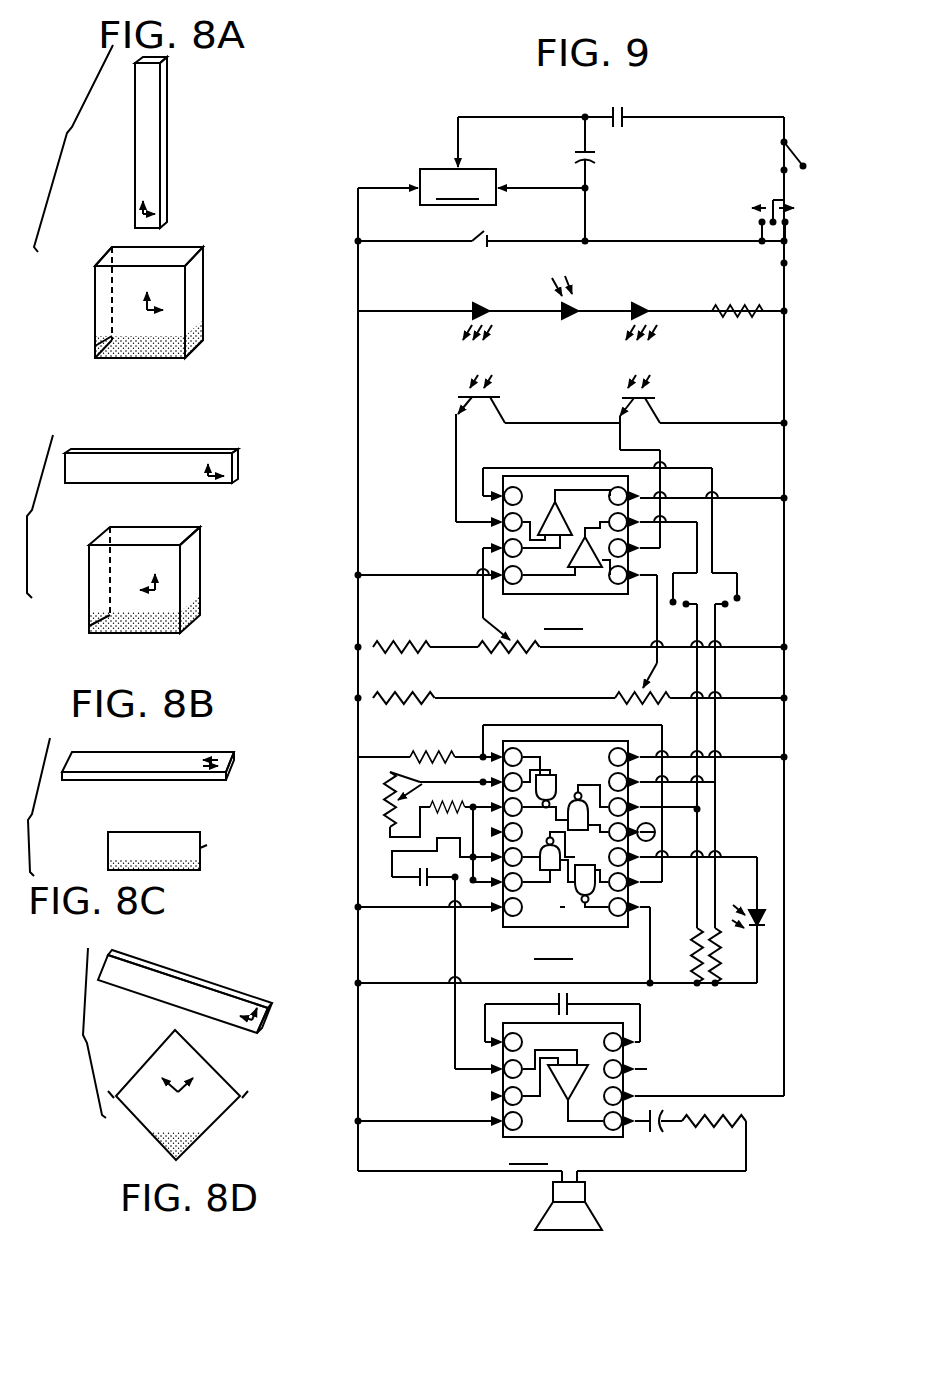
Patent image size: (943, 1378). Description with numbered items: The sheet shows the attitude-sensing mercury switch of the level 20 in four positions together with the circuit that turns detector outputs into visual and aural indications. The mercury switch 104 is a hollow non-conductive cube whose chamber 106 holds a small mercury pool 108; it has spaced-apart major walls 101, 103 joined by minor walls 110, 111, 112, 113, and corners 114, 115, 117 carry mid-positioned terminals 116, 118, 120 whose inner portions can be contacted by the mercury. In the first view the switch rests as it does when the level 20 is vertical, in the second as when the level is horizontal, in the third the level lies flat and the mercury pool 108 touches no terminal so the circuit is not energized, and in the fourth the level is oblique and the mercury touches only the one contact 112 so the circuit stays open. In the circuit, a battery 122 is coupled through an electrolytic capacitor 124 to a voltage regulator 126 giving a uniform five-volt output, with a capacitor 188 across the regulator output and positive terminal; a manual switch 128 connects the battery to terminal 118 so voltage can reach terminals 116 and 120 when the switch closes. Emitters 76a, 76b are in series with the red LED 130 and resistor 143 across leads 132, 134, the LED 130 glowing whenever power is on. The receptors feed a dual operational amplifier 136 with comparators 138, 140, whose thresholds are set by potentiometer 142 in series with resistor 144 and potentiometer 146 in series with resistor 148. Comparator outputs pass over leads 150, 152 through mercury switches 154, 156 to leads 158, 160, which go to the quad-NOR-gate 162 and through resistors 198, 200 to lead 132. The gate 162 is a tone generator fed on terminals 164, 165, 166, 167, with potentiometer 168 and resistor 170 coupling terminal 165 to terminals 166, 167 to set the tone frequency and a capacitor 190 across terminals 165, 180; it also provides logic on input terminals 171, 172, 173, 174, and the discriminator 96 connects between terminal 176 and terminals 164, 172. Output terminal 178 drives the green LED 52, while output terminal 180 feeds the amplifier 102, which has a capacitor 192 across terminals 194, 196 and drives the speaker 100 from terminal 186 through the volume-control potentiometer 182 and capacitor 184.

In FIG. 8A, the level 20 is at (173, 139).
In FIG. 8B, the level 20 is at (246, 463).
In FIG. 8C, the level 20 is at (234, 752).
In FIG. 8D, the level 20 is at (214, 972).
In FIG. 8A, the major wall 101 is at (168, 320).
In FIG. 9, the amplifier 102 is at (563, 1094).
In FIG. 8A, the major wall 103 is at (170, 246).
In FIG. 8A, the mercury switch 104 is at (210, 284).
In FIG. 8B, the mercury switch 104 is at (210, 580).
In FIG. 8C, the mercury switch 104 is at (114, 828).
In FIG. 8D, the mercury switch 104 is at (136, 1128).
In FIG. 9, the mercury switch 104 is at (766, 204).
In FIG. 8A, the chamber 106 is at (122, 308).
In FIG. 8B, the chamber 106 is at (121, 575).
In FIG. 8C, the chamber 106 is at (108, 845).
In FIG. 8A, the mercury pool 108 is at (168, 360).
In FIG. 8B, the mercury pool 108 is at (148, 630).
In FIG. 8C, the mercury pool 108 is at (186, 870).
In FIG. 8A, the minor wall 110 is at (94, 282).
In FIG. 8A, the minor wall 111 is at (198, 249).
In FIG. 8A, the minor wall 112 is at (116, 360).
In FIG. 8A, the minor wall 113 is at (195, 298).
In FIG. 8A, the corner 114 is at (190, 350).
In FIG. 8A, the corner 115 is at (100, 347).
In FIG. 8A, the terminal 116 is at (108, 263).
In FIG. 8B, the terminal 116 is at (100, 622).
In FIG. 9, the terminal 116 is at (787, 224).
In FIG. 8A, the corner 117 is at (100, 264).
In FIG. 8A, the terminal 118 is at (106, 346).
In FIG. 8B, the terminal 118 is at (190, 622).
In FIG. 9, the terminal 118 is at (783, 178).
In FIG. 8A, the terminal 120 is at (196, 342).
In FIG. 8B, the terminal 120 is at (190, 538).
In FIG. 9, the terminal 120 is at (762, 226).
In FIG. 9, the battery 122 is at (626, 116).
In FIG. 9, the electrolytic capacitor 124 is at (592, 166).
In FIG. 9, the voltage regulator 126 is at (471, 161).
In FIG. 9, the manual switch 128 is at (792, 158).
In FIG. 9, the LED 130 is at (580, 300).
In FIG. 9, the lead 132 is at (358, 436).
In FIG. 9, the lead 134 is at (784, 395).
In FIG. 9, the dual operational amplifier 136 is at (565, 553).
In FIG. 9, the comparator 138 is at (562, 522).
In FIG. 9, the comparator 140 is at (567, 562).
In FIG. 9, the potentiometer 142 is at (486, 645).
In FIG. 9, the resistor 143 is at (725, 305).
In FIG. 9, the resistor 144 is at (380, 645).
In FIG. 9, the potentiometer 146 is at (628, 694).
In FIG. 9, the resistor 148 is at (422, 700).
In FIG. 9, the lead 150 is at (522, 467).
In FIG. 9, the lead 152 is at (700, 520).
In FIG. 9, the mercury switch 154 is at (682, 612).
In FIG. 9, the mercury switch 156 is at (730, 612).
In FIG. 9, the lead 158 is at (697, 678).
In FIG. 9, the lead 160 is at (716, 728).
In FIG. 9, the quad-NOR-gate 162 is at (565, 850).
In FIG. 9, the terminal 164 is at (510, 750).
In FIG. 9, the terminal 165 is at (525, 778).
In FIG. 9, the terminal 166 is at (503, 882).
In FIG. 9, the terminal 167 is at (550, 876).
In FIG. 9, the potentiometer 168 is at (394, 803).
In FIG. 9, the resistor 170 is at (428, 808).
In FIG. 9, the input terminal 171 is at (622, 910).
In FIG. 9, the input terminal 172 is at (634, 896).
In FIG. 9, the input terminal 173 is at (650, 803).
In FIG. 9, the input terminal 174 is at (605, 776).
In FIG. 9, the terminal 176 is at (606, 832).
In FIG. 9, the output terminal 178 is at (640, 862).
In FIG. 9, the output terminal 180 is at (546, 808).
In FIG. 9, the potentiometer 182 is at (746, 1125).
In FIG. 9, the capacitor 184 is at (664, 1135).
In FIG. 9, the terminal 186 is at (634, 1098).
In FIG. 9, the capacitor 188 is at (470, 238).
In FIG. 9, the capacitor 190 is at (422, 887).
In FIG. 9, the capacitor 192 is at (568, 1002).
In FIG. 9, the terminal 194 is at (510, 1040).
In FIG. 9, the terminal 196 is at (628, 1040).
In FIG. 9, the resistor 198 is at (695, 960).
In FIG. 9, the resistor 200 is at (720, 972).
In FIG. 9, the green LED 52 is at (750, 905).
In FIG. 9, the emitter 76a is at (494, 276).
In FIG. 9, the emitter 76b is at (642, 304).
In FIG. 9, the discriminator 96 is at (656, 833).
In FIG. 9, the speaker 100 is at (602, 1216).